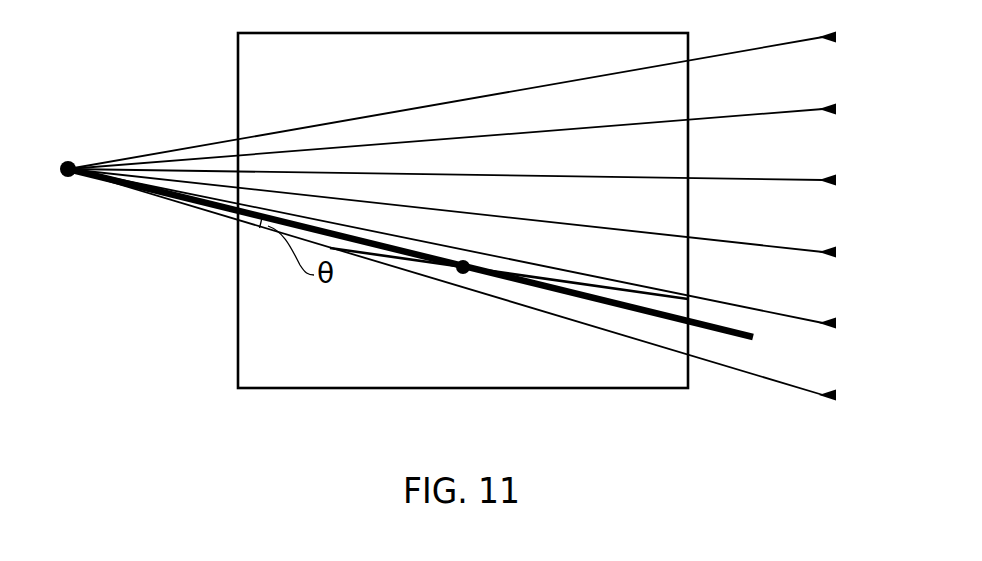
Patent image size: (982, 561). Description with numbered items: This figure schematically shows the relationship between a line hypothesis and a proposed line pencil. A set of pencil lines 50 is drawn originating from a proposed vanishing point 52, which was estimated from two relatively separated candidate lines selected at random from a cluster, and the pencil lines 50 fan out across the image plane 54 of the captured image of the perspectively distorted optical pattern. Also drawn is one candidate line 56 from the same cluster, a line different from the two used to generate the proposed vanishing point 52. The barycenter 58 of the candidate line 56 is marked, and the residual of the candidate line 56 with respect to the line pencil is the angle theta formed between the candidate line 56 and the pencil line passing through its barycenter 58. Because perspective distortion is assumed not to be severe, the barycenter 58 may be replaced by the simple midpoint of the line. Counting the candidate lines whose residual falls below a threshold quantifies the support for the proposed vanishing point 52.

The pencil lines 50 is at (836, 37).
The proposed vanishing point 52 is at (63, 177).
The image plane 54 is at (238, 333).
The candidate line 56 is at (572, 280).
The barycenter 58 is at (462, 273).